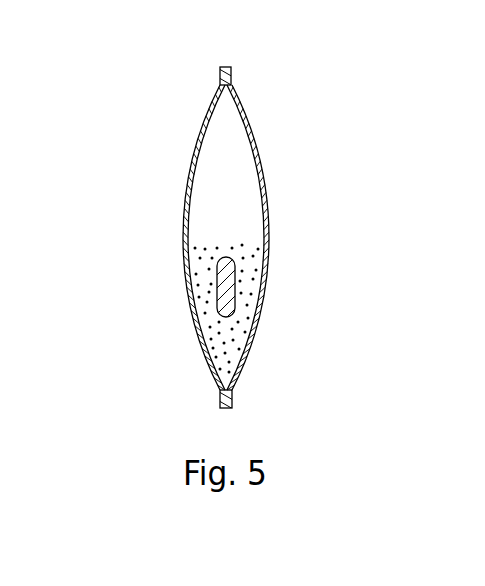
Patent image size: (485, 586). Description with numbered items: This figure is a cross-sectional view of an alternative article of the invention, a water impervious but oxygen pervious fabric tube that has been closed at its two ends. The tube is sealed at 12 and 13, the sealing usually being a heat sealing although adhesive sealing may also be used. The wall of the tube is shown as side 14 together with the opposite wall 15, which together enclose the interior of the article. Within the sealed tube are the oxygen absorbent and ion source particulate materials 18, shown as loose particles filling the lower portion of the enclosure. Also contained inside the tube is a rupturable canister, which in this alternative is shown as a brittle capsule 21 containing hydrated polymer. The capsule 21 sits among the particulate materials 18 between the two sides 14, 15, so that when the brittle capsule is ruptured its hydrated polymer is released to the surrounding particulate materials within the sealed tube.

The seal 12 is at (222, 78).
The seal 13 is at (220, 402).
The side 14 is at (196, 152).
The second wall 15 is at (265, 190).
The oxygen absorbent and ion source particulate materials 18 is at (208, 298).
The brittle capsule 21 is at (219, 273).